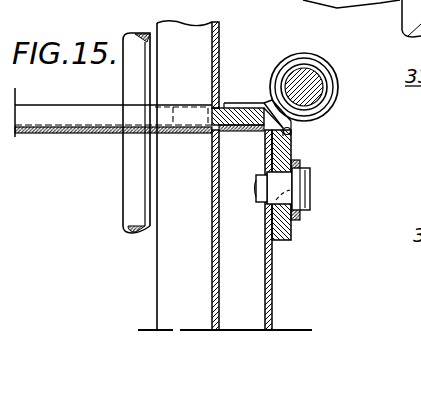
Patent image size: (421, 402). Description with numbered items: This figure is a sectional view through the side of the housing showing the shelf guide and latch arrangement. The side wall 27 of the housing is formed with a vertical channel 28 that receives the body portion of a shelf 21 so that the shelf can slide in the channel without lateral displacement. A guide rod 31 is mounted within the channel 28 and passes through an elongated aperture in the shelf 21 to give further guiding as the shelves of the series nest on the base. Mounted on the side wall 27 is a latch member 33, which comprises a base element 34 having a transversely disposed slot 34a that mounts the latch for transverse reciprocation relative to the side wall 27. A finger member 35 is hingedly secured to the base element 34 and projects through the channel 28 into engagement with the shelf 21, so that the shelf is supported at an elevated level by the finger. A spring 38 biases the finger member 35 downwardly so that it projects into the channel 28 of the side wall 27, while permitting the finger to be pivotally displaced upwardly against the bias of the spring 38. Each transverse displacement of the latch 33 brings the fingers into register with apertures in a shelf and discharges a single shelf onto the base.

The shelf 21 is at (59, 134).
The side wall 27 is at (219, 31).
The vertical channel 28 is at (173, 300).
The guide rod 31 is at (124, 210).
The latch member 33 is at (345, 113).
The base element 34 is at (273, 258).
The transversely disposed slot 34a is at (310, 189).
The finger member 35 is at (243, 108).
The spring 38 is at (310, 58).